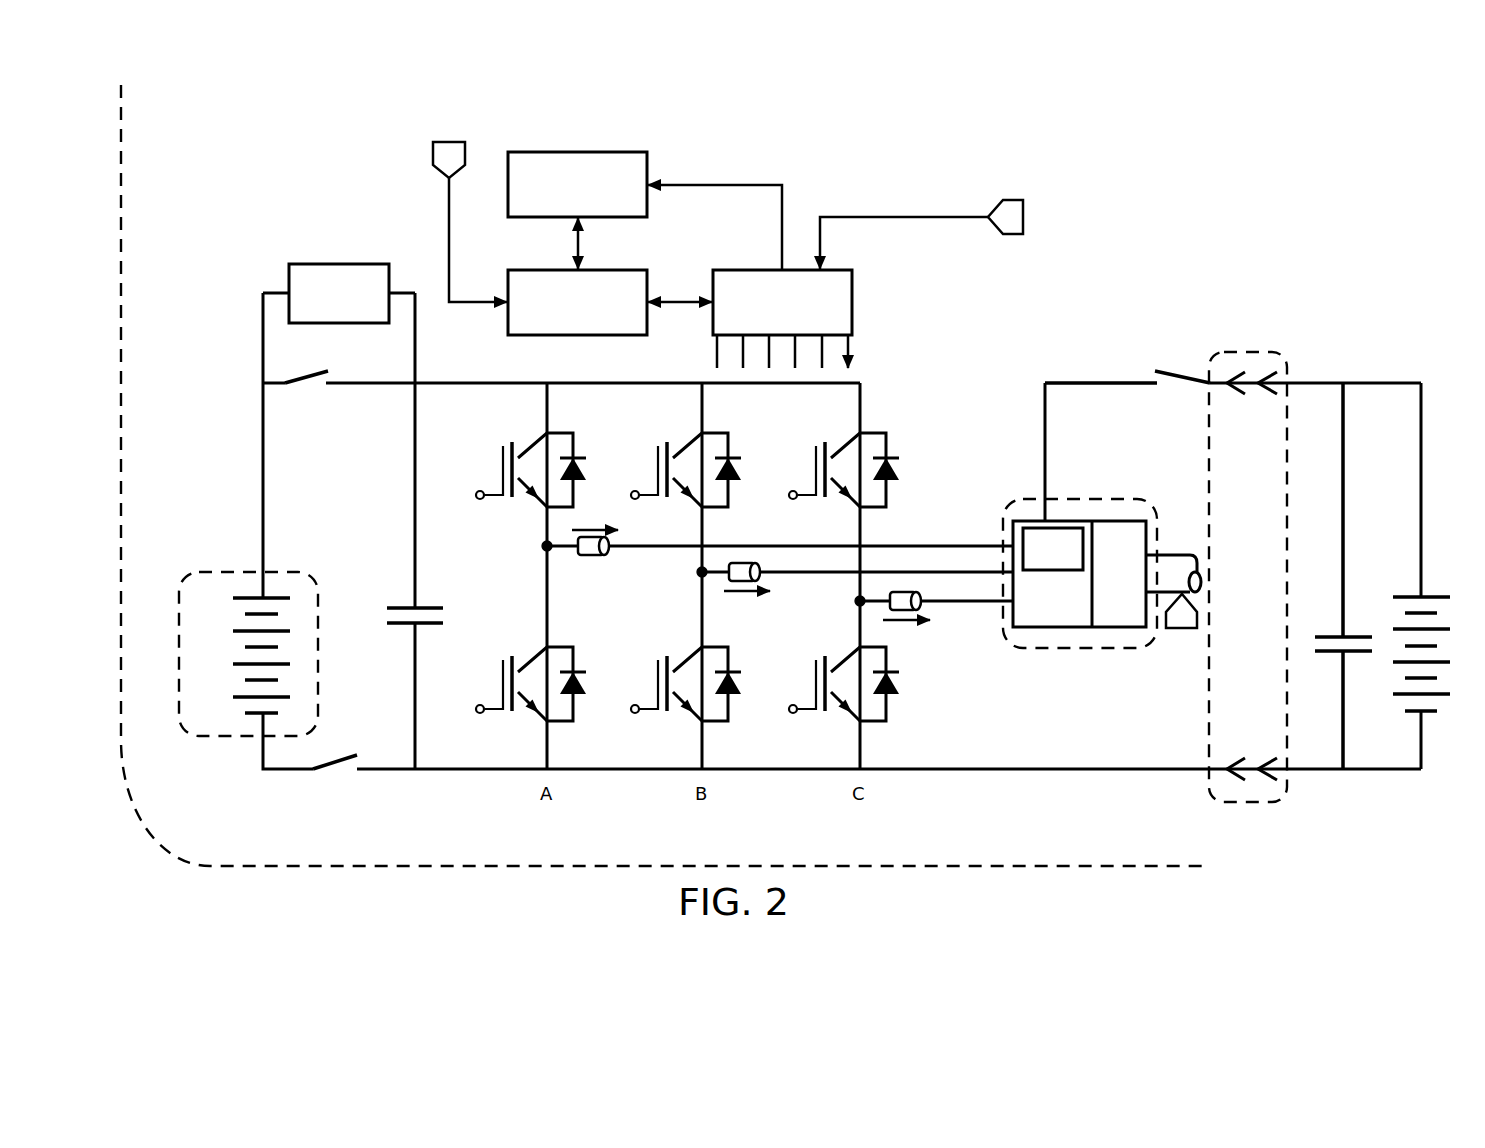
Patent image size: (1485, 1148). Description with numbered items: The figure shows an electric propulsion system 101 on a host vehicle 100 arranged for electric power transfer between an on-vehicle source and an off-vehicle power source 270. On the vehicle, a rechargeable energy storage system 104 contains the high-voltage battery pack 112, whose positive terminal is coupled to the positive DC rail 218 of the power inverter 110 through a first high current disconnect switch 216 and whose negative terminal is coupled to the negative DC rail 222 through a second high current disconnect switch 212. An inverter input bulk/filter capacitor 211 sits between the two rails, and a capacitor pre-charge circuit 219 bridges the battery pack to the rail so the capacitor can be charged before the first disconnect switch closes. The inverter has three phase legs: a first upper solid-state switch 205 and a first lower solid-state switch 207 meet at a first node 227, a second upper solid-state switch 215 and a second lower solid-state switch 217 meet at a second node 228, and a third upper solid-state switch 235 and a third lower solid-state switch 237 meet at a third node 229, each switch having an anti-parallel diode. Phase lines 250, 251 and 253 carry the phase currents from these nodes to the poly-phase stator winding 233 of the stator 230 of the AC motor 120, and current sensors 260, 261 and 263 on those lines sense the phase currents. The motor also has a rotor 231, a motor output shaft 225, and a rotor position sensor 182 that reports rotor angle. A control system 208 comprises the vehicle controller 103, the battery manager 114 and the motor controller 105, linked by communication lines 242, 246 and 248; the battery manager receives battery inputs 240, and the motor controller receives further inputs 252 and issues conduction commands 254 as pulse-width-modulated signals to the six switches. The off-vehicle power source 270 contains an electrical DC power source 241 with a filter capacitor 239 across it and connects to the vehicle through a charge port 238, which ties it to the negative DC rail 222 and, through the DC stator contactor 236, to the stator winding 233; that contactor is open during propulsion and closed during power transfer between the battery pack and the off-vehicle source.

The host vehicle 100 is at (296, 176).
The electric propulsion system 101 is at (1103, 160).
The vehicle controller 103 is at (594, 194).
The rechargeable energy storage system 104 is at (235, 572).
The motor controller 105 is at (799, 312).
The power inverter 110 is at (935, 395).
The battery pack 112 is at (224, 664).
The battery manager 114 is at (594, 312).
The AC motor 120 is at (1028, 499).
The rotor position sensor 182 is at (1182, 628).
The solid-state switch S1 205 is at (522, 430).
The solid-state switch S4 207 is at (525, 722).
The control system 208 is at (800, 130).
The inverter input bulk/filter capacitor 211 is at (405, 634).
The high current disconnect switch SW2 212 is at (330, 752).
The solid-state switch S3 215 is at (679, 430).
The high current disconnect switch SW1 216 is at (320, 365).
The solid-state switch S6 217 is at (680, 722).
The positive DC rail 218 is at (537, 383).
The capacitor pre-charge circuit 219 is at (350, 304).
The negative DC rail 222 is at (428, 772).
The motor output shaft 225 is at (1185, 555).
The node (phase pole A) 227 is at (545, 546).
The node (phase pole B) 228 is at (702, 573).
The node (phase pole C) 229 is at (860, 601).
The stator 230 is at (1069, 624).
The rotor 231 is at (1136, 624).
The poly-phase stator winding 233 is at (1070, 560).
The solid-state switch S5 235 is at (837, 430).
The high current switch SW3 236 is at (1167, 358).
The solid-state switch S2 237 is at (838, 722).
The charge port 238 is at (1255, 352).
The filter capacitor 239 is at (1325, 628).
The inputs 240 is at (440, 150).
The electrical DC power source 241 is at (1400, 590).
The communication line 242 is at (576, 248).
The communication line 246 is at (688, 290).
The communication line 248 is at (686, 185).
The line 250 is at (672, 544).
The line 251 is at (938, 576).
The inputs 252 is at (1006, 200).
The line 253 is at (1003, 636).
The conduction commands 254 is at (852, 365).
The current sensor 260 is at (583, 555).
The current sensor 261 is at (757, 566).
The current sensor 263 is at (912, 593).
The off-vehicle power source 270 is at (1370, 347).